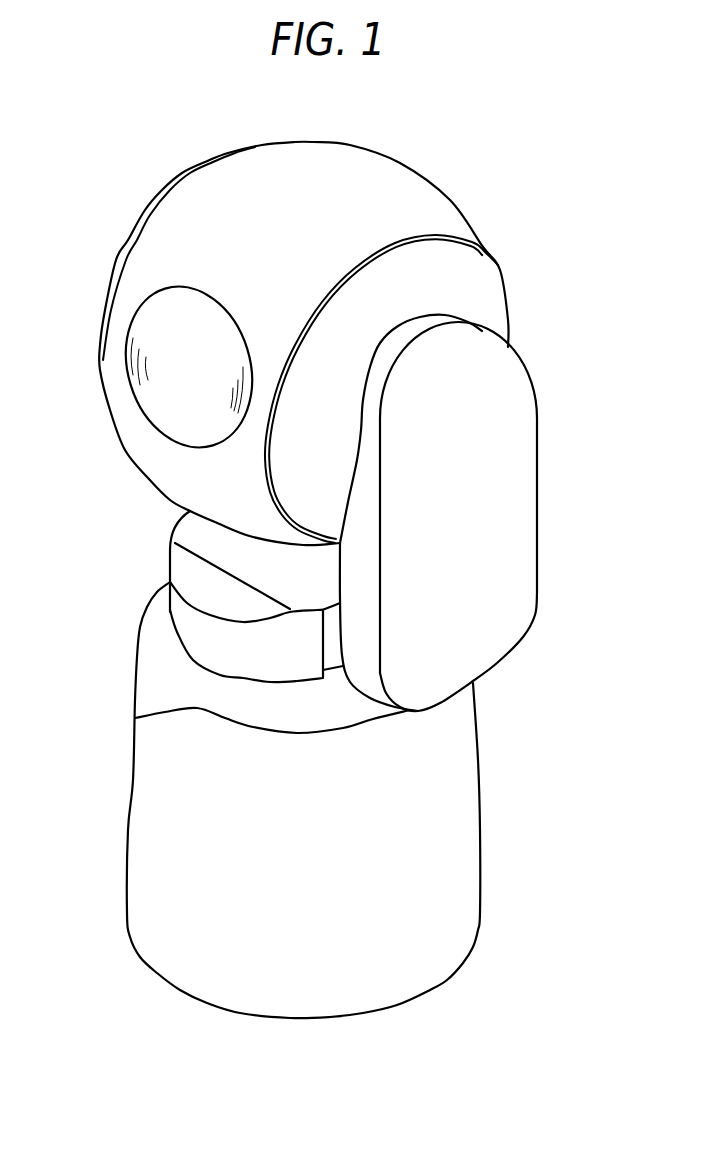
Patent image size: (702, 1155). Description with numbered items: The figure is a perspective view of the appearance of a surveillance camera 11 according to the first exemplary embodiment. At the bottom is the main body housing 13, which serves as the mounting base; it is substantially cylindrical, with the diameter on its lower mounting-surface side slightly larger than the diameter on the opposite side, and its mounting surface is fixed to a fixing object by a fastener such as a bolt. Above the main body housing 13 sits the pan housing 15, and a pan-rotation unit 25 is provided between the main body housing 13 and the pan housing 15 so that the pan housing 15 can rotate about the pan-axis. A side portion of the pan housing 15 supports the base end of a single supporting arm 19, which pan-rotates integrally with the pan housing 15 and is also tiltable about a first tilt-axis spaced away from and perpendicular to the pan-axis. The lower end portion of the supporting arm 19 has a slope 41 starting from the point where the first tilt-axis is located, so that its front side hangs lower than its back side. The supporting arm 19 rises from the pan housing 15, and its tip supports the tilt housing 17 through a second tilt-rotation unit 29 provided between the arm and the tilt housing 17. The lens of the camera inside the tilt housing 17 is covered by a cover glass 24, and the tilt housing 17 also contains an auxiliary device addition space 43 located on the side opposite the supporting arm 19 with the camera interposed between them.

The surveillance camera 11 is at (161, 158).
The main body housing 13 is at (128, 890).
The pan housing 15 is at (194, 635).
The tilt housing 17 is at (344, 172).
The supporting arm 19 is at (472, 513).
The cover glass 24 is at (166, 316).
The pan-rotation unit 25 is at (231, 680).
The second tilt-rotation unit 29 is at (411, 236).
The slope 41 is at (500, 658).
The auxiliary device addition space 43 is at (132, 238).